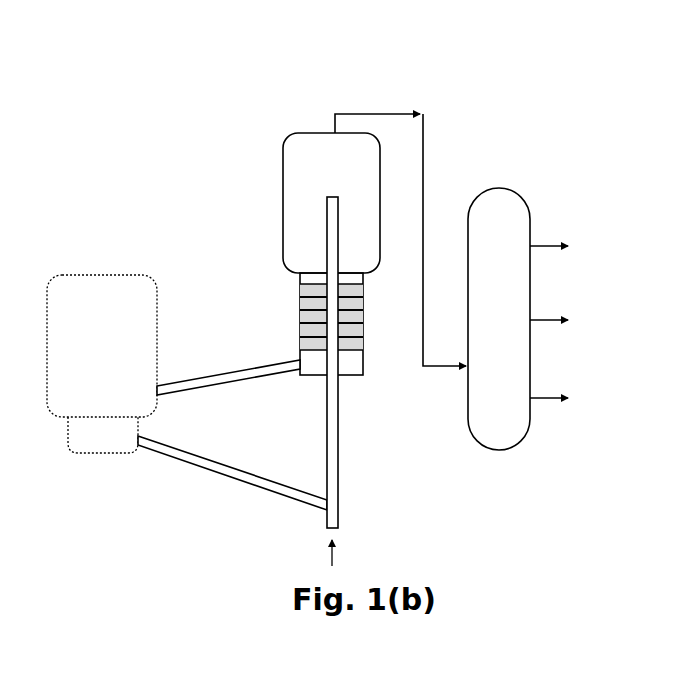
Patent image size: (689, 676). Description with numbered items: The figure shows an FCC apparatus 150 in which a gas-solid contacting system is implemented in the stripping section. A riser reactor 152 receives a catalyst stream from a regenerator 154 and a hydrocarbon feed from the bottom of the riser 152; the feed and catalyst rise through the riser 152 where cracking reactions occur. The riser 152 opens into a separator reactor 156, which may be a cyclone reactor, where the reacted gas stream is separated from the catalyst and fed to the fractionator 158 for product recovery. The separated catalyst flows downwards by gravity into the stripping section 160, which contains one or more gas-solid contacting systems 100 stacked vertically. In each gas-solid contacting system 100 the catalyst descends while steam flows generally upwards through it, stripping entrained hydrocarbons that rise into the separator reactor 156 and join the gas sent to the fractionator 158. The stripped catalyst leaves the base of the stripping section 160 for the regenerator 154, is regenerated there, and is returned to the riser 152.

The gas-solid contacting system 100 is at (300, 306).
The FCC apparatus 150 is at (330, 70).
The riser reactor 152 is at (326, 386).
The regenerator 154 is at (150, 331).
The separator reactor 156 is at (332, 174).
The fractionator 158 is at (490, 311).
The stripping section 160 is at (364, 372).